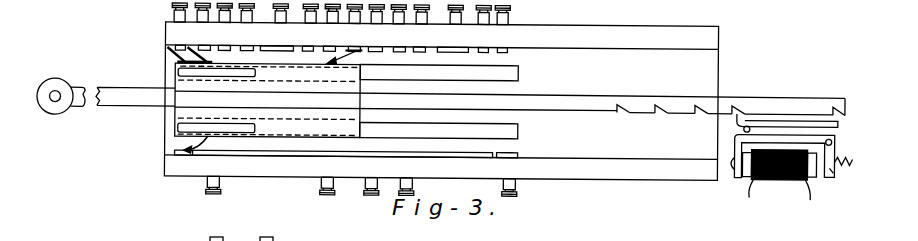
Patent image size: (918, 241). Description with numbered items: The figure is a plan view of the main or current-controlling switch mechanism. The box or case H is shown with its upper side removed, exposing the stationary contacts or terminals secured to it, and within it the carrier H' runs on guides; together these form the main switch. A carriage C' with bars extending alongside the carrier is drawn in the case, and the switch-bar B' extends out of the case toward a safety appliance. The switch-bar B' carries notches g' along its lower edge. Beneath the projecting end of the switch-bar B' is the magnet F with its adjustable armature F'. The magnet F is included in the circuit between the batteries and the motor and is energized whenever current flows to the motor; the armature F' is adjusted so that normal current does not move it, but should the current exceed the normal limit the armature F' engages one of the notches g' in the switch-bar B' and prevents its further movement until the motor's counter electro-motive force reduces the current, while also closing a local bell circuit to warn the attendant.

The box or case H is at (441, 100).
The carrier H' is at (268, 100).
The sliding carriage C' is at (366, 99).
The switch-bar B' is at (510, 103).
The ratchet teeth g' is at (731, 117).
The magnet F is at (792, 168).
The armature F' is at (793, 123).